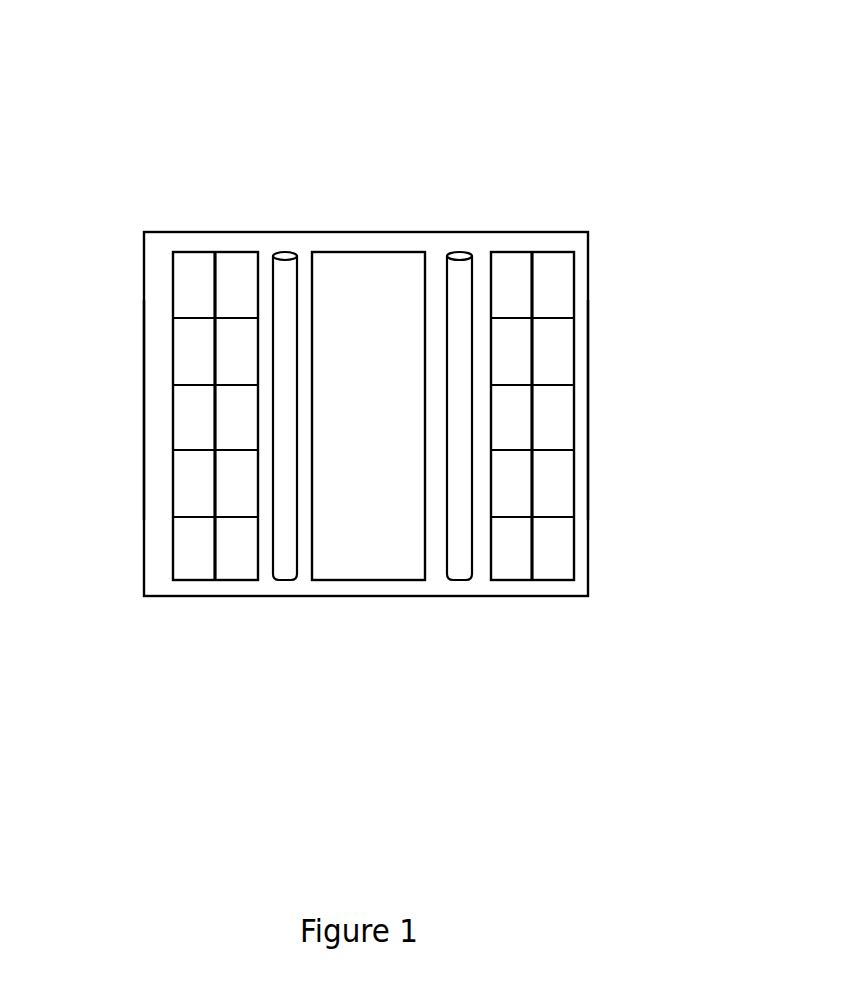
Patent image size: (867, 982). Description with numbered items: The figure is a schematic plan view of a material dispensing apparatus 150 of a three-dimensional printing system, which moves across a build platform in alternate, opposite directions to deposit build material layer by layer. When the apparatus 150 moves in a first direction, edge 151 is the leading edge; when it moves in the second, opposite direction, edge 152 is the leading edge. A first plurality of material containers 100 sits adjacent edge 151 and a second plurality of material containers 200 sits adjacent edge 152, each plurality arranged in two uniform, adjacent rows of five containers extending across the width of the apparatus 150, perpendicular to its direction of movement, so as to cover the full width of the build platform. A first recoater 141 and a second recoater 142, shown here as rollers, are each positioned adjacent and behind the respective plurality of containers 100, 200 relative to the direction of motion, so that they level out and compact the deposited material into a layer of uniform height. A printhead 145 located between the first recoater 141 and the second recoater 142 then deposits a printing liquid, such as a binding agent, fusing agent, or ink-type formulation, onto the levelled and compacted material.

The material dispensing apparatus 150 is at (451, 50).
The first plurality of material containers 100 is at (250, 582).
The second plurality of material containers 200 is at (568, 582).
The first recoater 141 is at (286, 252).
The second recoater 142 is at (457, 252).
The printhead 145 is at (361, 582).
The edge 151 is at (144, 405).
The edge 152 is at (589, 408).